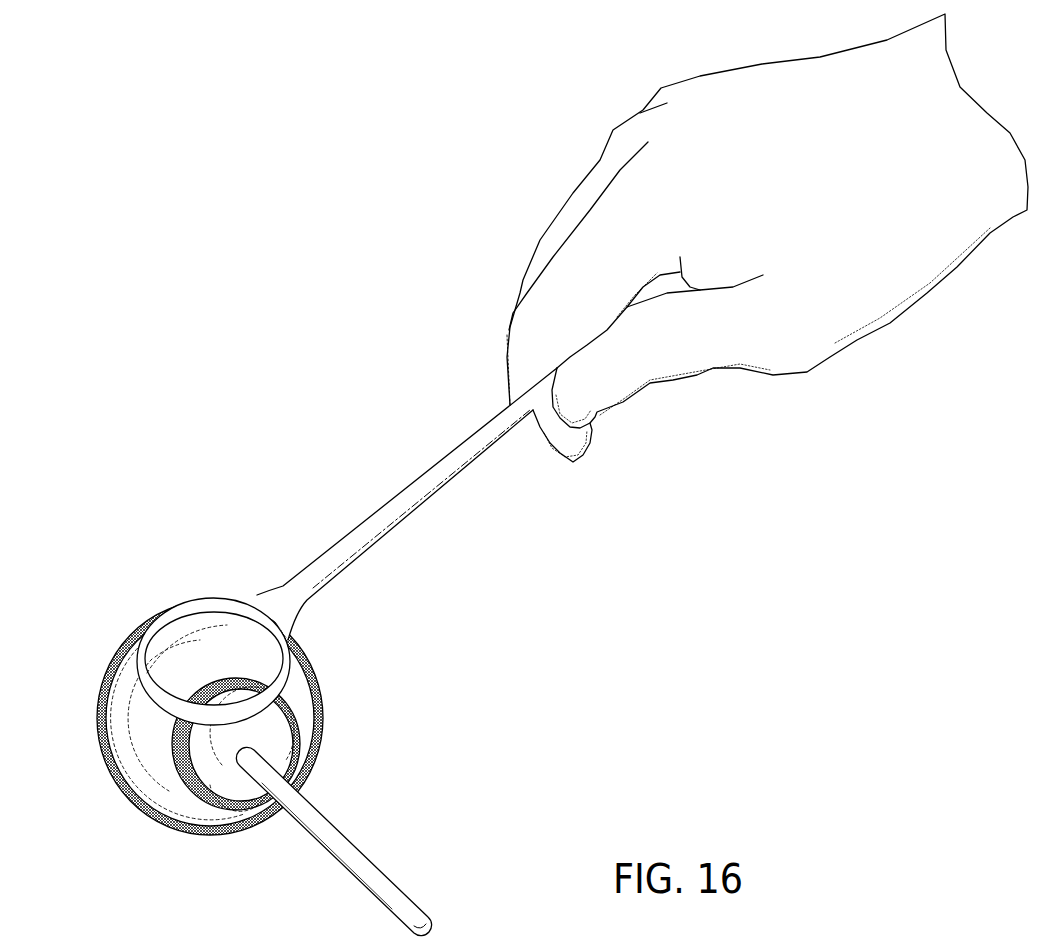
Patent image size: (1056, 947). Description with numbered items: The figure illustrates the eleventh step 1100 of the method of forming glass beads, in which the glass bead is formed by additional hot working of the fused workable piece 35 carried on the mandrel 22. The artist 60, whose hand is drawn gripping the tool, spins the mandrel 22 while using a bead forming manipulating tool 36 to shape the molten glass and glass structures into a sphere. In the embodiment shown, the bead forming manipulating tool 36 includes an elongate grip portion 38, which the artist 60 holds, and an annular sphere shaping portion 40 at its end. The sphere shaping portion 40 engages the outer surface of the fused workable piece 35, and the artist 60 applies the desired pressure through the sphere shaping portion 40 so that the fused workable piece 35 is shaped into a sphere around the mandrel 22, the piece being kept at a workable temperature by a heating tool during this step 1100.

The eleventh step 1100 is at (214, 258).
The fused workable piece 35 is at (108, 666).
The mandrel 22 is at (387, 883).
The bead forming manipulating tool 36 is at (407, 504).
The elongate grip portion 38 is at (488, 453).
The annular sphere shaping portion 40 is at (290, 677).
The artist 60 is at (803, 363).